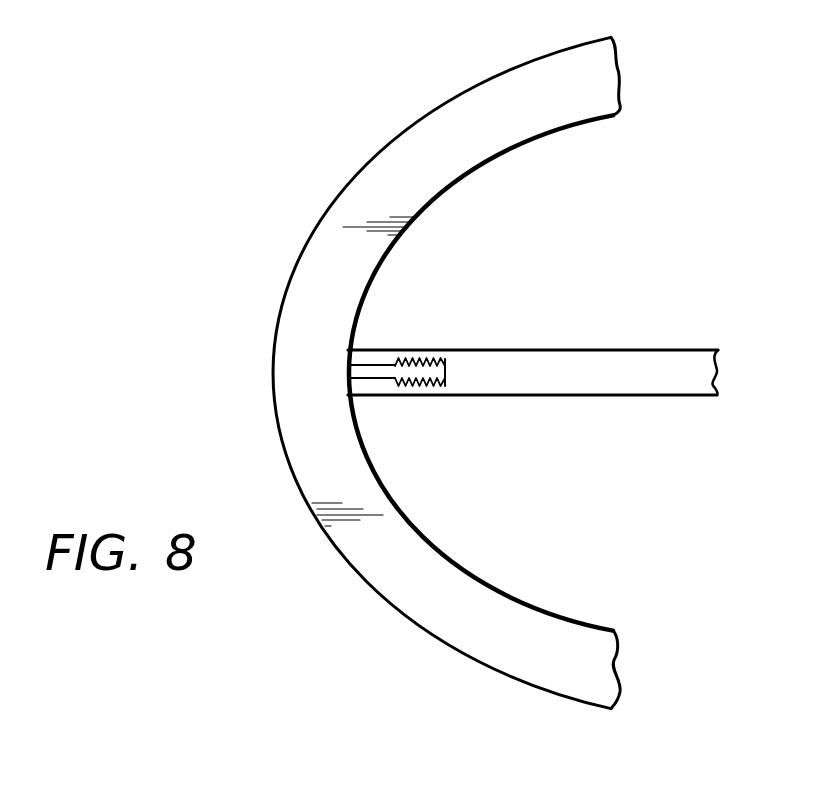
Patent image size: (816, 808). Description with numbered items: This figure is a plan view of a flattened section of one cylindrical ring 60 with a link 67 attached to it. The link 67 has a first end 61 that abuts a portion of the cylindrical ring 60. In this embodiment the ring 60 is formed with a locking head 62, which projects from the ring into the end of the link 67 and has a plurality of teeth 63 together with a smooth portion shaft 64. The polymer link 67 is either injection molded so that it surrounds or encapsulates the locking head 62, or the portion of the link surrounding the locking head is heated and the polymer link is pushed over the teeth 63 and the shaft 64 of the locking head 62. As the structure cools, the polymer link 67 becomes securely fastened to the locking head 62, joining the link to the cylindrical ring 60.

The cylindrical ring 60 is at (375, 153).
The first end 61 is at (405, 351).
The locking head 62 is at (445, 371).
The teeth 63 is at (422, 386).
The smooth portion shaft 64 is at (368, 382).
The link 67 is at (625, 350).